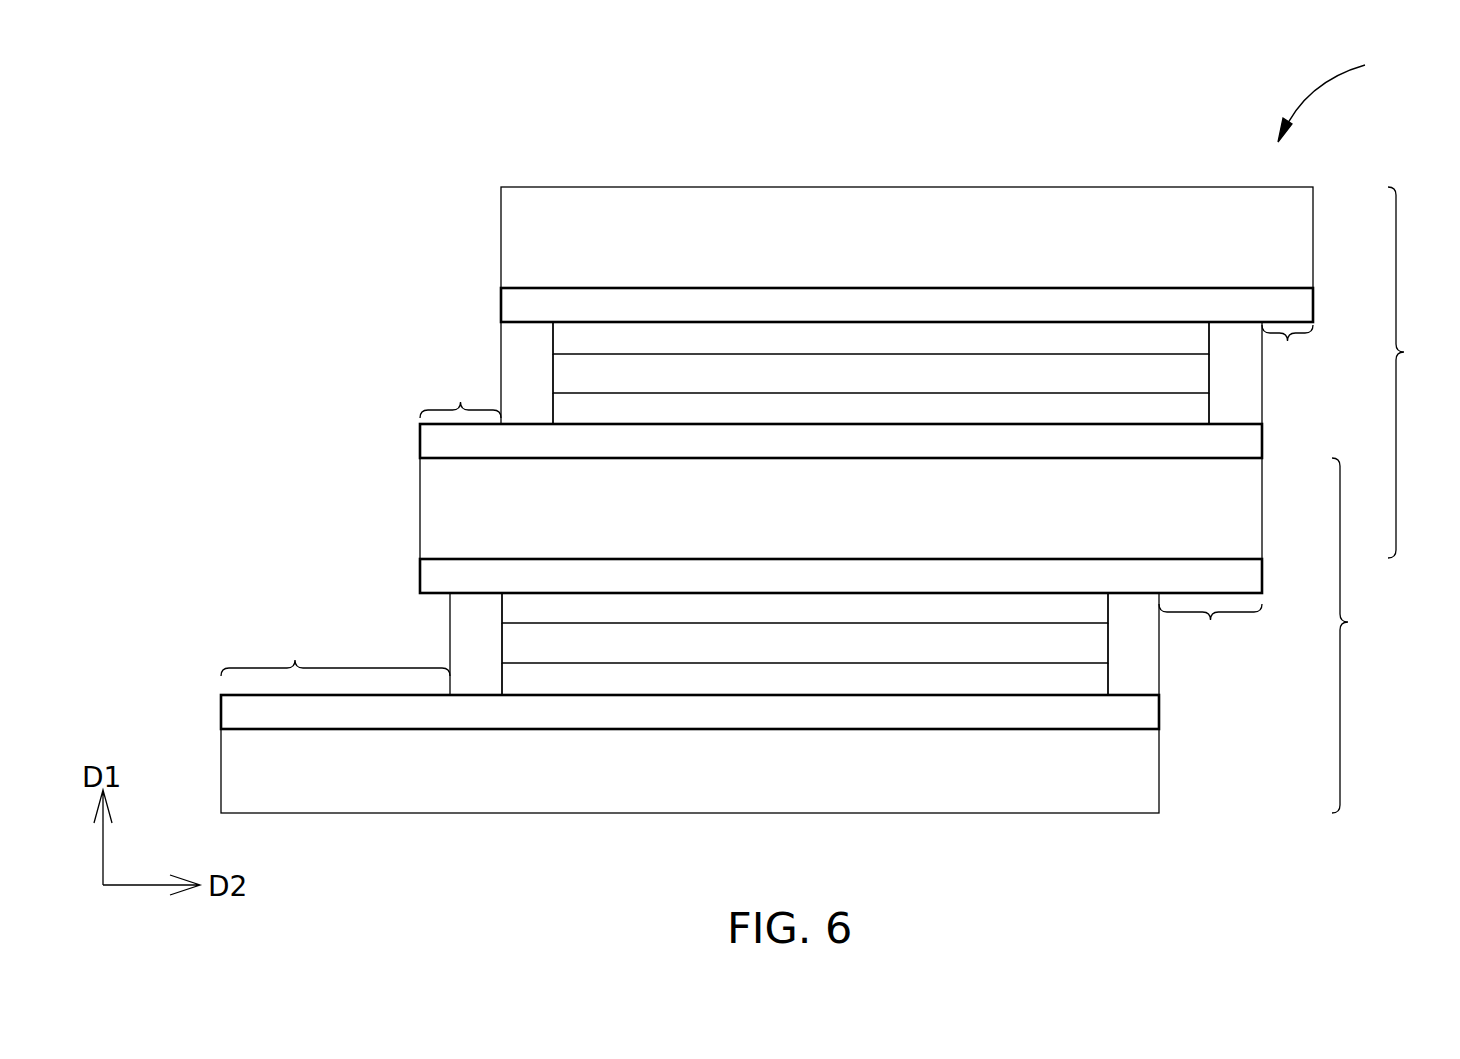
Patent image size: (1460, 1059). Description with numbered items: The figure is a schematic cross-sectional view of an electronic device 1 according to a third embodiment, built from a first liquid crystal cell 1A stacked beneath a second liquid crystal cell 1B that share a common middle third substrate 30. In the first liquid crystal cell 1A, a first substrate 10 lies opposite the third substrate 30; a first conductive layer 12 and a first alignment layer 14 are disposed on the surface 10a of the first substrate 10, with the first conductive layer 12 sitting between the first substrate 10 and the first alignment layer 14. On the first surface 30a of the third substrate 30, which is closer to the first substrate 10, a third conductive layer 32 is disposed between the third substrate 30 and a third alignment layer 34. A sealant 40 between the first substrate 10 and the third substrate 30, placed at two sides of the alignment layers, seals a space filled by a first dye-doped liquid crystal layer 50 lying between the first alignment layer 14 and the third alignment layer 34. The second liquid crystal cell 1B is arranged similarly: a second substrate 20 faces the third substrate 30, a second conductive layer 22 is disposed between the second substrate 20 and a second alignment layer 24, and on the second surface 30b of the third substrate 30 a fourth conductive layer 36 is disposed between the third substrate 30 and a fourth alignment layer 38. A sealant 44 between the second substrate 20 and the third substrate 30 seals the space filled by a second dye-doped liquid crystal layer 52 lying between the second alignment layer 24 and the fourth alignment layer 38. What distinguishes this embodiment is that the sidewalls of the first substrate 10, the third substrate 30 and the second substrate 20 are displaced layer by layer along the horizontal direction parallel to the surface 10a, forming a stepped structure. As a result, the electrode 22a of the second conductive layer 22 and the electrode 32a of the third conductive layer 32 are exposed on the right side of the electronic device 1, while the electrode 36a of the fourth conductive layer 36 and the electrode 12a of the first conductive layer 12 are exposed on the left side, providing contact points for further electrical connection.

The electronic device 1 is at (1343, 92).
The first liquid crystal cell 1A is at (1359, 635).
The second liquid crystal cell 1B is at (1415, 372).
The first substrate 10 is at (758, 788).
The surface of the first substrate 10a is at (263, 732).
The first conductive layer 12 is at (242, 716).
The electrode of the first conductive layer 12a is at (335, 645).
The first alignment layer 14 is at (543, 685).
The second substrate 20 is at (810, 244).
The second conductive layer 22 is at (521, 306).
The electrode of the second conductive layer 22a is at (1292, 356).
The second alignment layer 24 is at (571, 344).
The third substrate 30 is at (810, 521).
The first surface of the third substrate 30a is at (437, 557).
The second surface of the third substrate 30b is at (437, 460).
The third conductive layer 32 is at (440, 580).
The electrode of the third conductive layer 32a is at (1210, 636).
The third alignment layer 34 is at (522, 612).
The fourth conductive layer 36 is at (440, 435).
The electrode of the fourth conductive layer 36a is at (460, 394).
The fourth alignment layer 38 is at (582, 408).
The sealant 40 is at (460, 659).
The sealant 44 is at (511, 391).
The first dye-doped liquid crystal layer 50 is at (758, 659).
The second dye-doped liquid crystal layer 52 is at (810, 388).